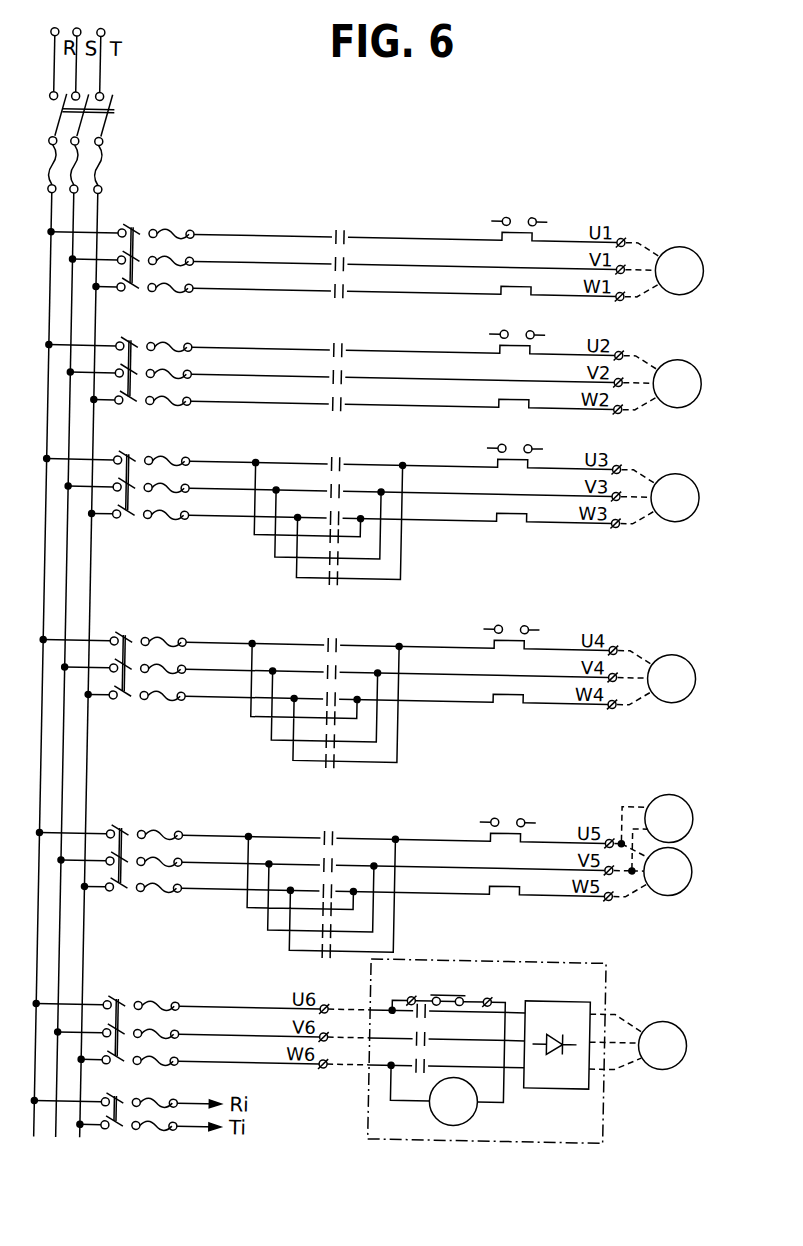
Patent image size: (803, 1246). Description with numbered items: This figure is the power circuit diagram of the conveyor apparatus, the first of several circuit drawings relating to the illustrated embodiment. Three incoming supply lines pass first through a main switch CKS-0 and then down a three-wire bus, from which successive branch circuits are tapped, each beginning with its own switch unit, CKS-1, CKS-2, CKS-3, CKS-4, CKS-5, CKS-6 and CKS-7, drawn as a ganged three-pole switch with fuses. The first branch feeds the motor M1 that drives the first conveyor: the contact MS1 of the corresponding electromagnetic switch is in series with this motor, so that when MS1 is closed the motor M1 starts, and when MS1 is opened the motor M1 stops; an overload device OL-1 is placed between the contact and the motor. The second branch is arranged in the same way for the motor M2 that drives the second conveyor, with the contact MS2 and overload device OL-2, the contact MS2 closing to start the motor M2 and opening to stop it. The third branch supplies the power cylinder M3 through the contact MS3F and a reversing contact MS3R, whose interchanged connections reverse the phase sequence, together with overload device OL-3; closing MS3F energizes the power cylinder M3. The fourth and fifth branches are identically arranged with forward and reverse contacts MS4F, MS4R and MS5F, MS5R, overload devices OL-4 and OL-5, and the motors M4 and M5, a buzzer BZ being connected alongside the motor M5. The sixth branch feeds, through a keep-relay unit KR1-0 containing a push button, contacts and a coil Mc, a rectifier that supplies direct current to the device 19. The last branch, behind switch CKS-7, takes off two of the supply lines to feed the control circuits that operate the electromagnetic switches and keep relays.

The DC load device fed through rectifier 19 is at (638, 1042).
The main circuit breaker / knife switch CKS-0 is at (114, 143).
The circuit breaker with fuses for motor M1 CKS-1 is at (121, 242).
The circuit breaker with fuses for motor M2 CKS-2 is at (121, 357).
The circuit breaker with fuses for motor M3 CKS-3 is at (120, 472).
The circuit breaker with fuses for motor M4 CKS-4 is at (116, 655).
The circuit breaker with fuses for motor M5 CKS-5 is at (113, 844).
The circuit breaker with fuses for rectifier circuit CKS-6 is at (111, 1016).
The circuit breaker with fuses for control circuit R1 T1 CKS-7 is at (109, 1100).
The electromagnetic switch MS1 is at (339, 247).
The electromagnetic switch MS2 is at (337, 360).
The electromagnetic switch MS3F is at (335, 475).
The reverse magnetic switch contacts for motor M3 MS3R is at (328, 537).
The forward magnetic switch contacts for motor M4 MS4F is at (332, 654).
The reverse magnetic switch contacts for motor M4 MS4R is at (324, 717).
The forward magnetic switch contacts for motor M5 MS5F is at (328, 845).
The reverse magnetic switch contacts for motor M5 MS5R is at (321, 909).
The overload relay for motor M1 OL-1 is at (482, 240).
The overload relay for motor M2 OL-2 is at (480, 353).
The overload relay for motor M3 OL-3 is at (478, 468).
The overload relay for motor M4 OL-4 is at (474, 648).
The overload relay for motor M5 OL-5 is at (470, 840).
The motor M1 is at (664, 270).
The motor M2 is at (662, 383).
The power cylinder M3 is at (660, 497).
The motor M4 is at (656, 678).
The motor M5 is at (652, 871).
The buzzer BZ is at (654, 834).
The operating coil of keep relay KR1-0 is at (487, 1051).
The contactor coil Mc is at (434, 1095).